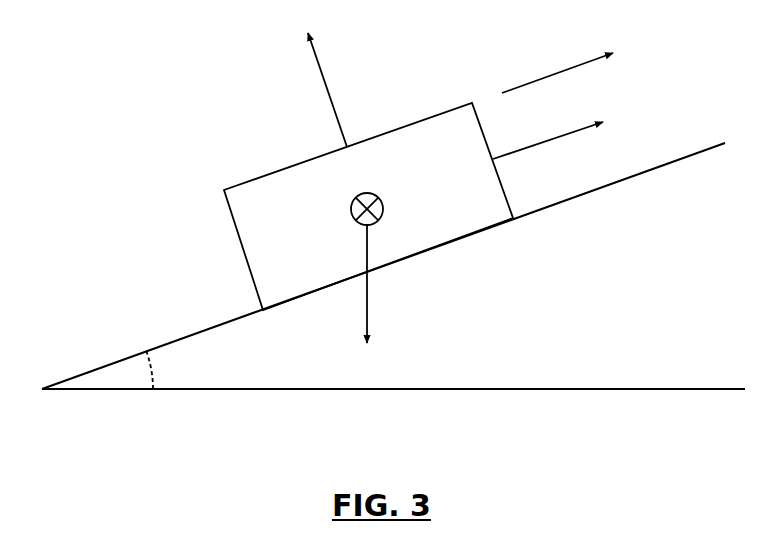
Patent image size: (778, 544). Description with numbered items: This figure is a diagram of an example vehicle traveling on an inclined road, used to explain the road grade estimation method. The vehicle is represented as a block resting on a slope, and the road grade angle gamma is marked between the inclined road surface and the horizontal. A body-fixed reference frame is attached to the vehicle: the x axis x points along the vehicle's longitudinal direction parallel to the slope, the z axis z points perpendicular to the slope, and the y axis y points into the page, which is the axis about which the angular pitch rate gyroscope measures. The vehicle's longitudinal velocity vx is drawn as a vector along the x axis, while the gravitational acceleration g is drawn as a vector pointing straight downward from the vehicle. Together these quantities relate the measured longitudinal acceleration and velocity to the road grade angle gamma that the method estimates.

The road grade angle gamma is at (162, 370).
The y axis y is at (353, 209).
The gravitational acceleration g is at (380, 284).
The z axis z is at (314, 90).
The x axis x is at (548, 140).
The longitudinal velocity vx is at (571, 65).